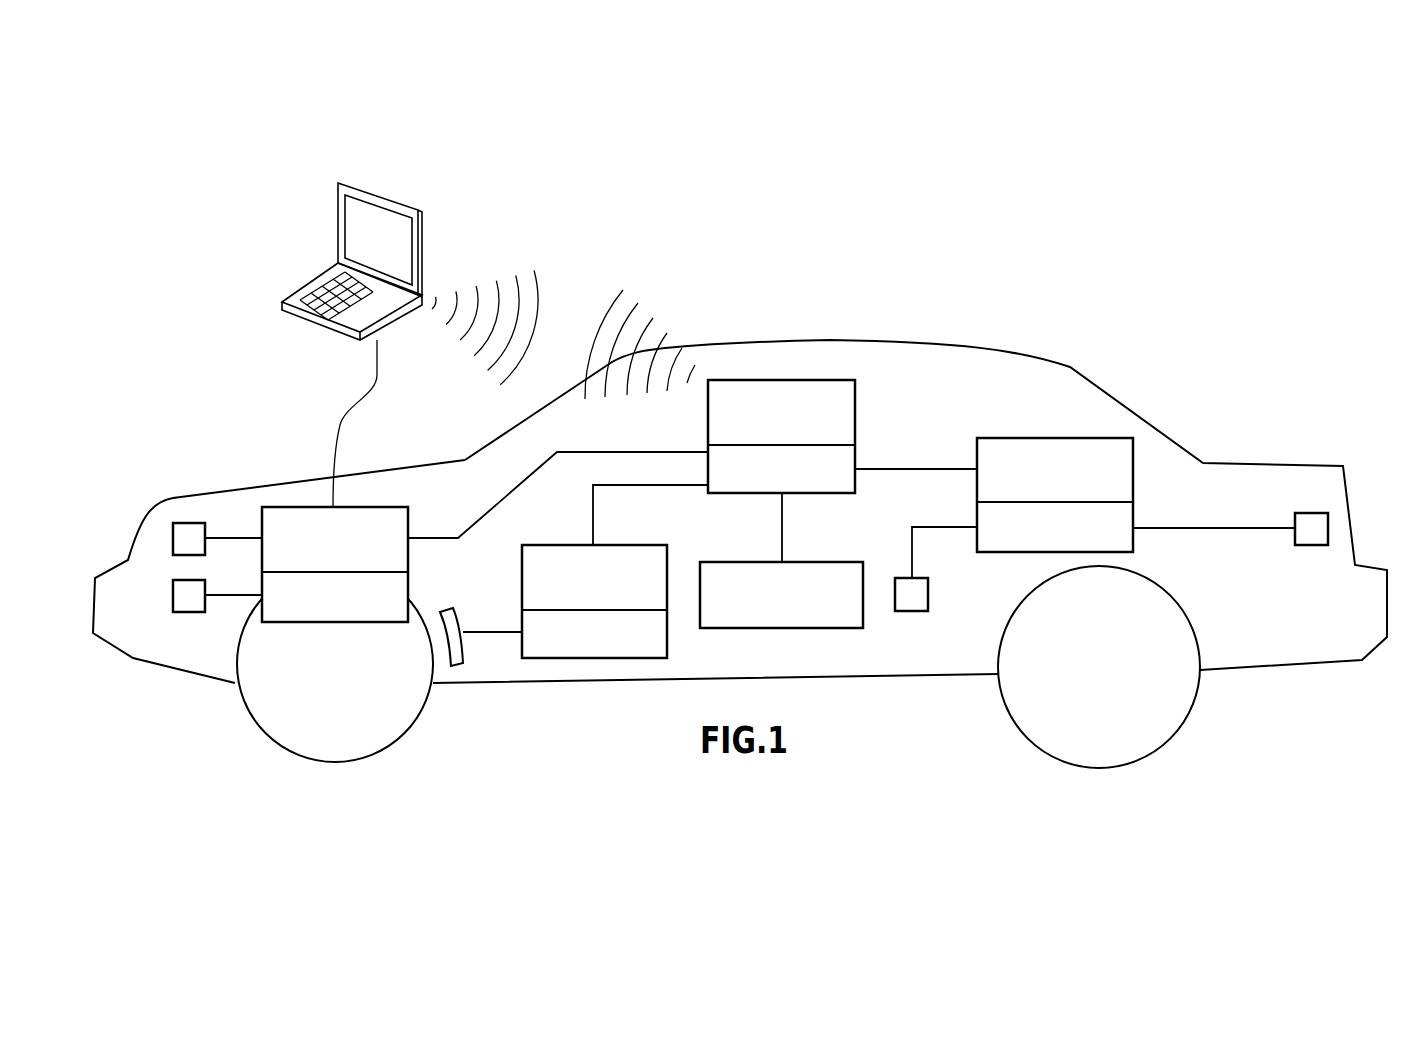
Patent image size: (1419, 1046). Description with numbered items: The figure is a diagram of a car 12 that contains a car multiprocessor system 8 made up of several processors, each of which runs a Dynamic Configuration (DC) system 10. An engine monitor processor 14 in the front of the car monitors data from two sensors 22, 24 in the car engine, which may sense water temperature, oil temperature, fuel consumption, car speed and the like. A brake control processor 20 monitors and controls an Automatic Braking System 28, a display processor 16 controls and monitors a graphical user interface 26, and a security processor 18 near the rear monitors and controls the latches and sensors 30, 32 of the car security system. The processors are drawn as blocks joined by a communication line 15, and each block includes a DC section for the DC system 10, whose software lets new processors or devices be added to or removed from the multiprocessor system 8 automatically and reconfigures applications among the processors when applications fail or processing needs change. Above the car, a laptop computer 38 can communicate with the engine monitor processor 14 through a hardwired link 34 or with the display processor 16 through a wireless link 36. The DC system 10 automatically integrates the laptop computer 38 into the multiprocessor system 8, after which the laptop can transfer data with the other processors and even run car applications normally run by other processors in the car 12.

The car multiprocessor system 8 is at (933, 222).
The Dynamic Configuration (DC) system 10 is at (335, 622).
The car 12 is at (963, 345).
The engine monitor processor 14 is at (295, 507).
The communication bus 15 is at (650, 452).
The display processor 16 is at (855, 408).
The security processor 18 is at (1010, 438).
The brake control processor 20 is at (568, 545).
The sensor 22 is at (190, 523).
The sensor 24 is at (173, 597).
The graphical user interface 26 is at (832, 562).
The Automatic Braking System (ABS) 28 is at (458, 610).
The latches and sensors 30 is at (912, 611).
The latches and sensors 32 is at (1310, 545).
The hardwired link 34 is at (345, 410).
The wireless link 36 is at (527, 270).
The laptop computer 38 is at (315, 272).